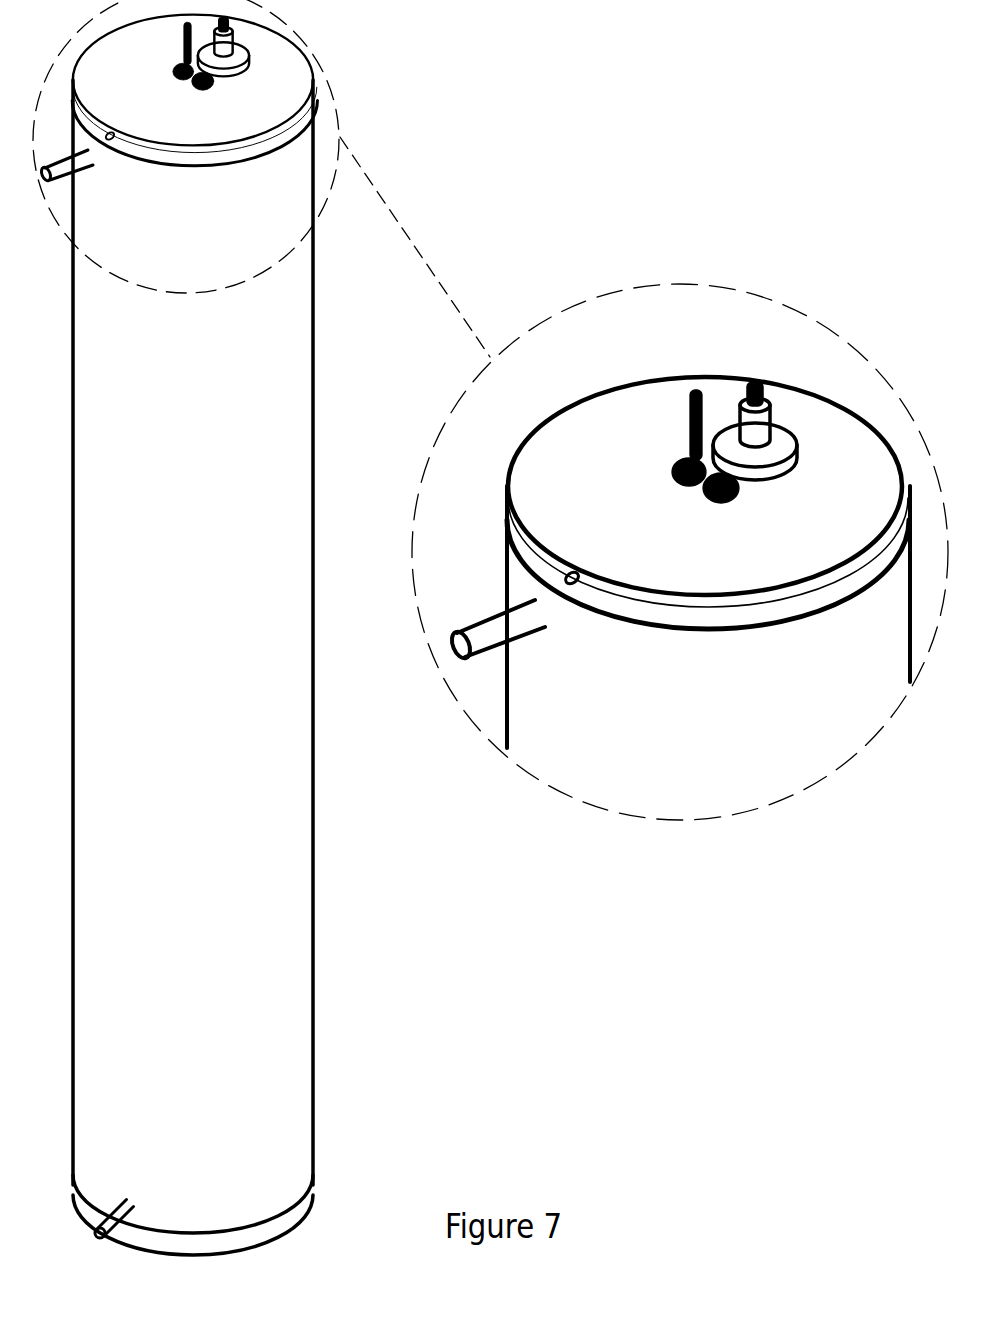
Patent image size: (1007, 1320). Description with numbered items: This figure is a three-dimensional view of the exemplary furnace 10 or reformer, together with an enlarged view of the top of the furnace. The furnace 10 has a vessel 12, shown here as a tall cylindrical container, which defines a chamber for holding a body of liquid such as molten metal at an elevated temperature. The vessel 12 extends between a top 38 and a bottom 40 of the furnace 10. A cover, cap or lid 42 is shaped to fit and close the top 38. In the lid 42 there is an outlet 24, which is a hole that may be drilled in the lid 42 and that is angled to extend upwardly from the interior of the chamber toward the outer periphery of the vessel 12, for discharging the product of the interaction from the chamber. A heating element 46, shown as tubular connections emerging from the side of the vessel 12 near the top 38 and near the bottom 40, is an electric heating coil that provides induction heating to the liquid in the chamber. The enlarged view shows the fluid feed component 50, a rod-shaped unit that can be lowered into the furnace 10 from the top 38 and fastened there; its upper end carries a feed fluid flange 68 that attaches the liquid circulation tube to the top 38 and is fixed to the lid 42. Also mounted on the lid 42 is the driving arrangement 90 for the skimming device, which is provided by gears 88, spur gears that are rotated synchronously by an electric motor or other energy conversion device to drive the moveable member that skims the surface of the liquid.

The furnace 10 is at (404, 78).
The vessel 12 is at (294, 845).
The outlet 24 is at (588, 593).
The top 38 is at (148, 86).
The bottom 40 is at (265, 1240).
The lid 42 is at (190, 152).
The heating element 46 is at (108, 1240).
The fluid feed component 50 is at (774, 355).
The feed fluid flange 68 is at (778, 448).
The gears 88 is at (702, 497).
The driving arrangement 90 is at (650, 442).